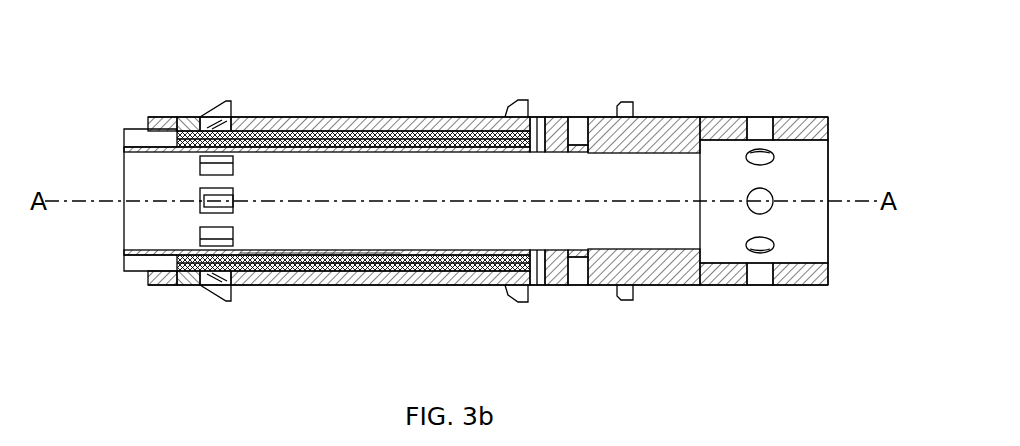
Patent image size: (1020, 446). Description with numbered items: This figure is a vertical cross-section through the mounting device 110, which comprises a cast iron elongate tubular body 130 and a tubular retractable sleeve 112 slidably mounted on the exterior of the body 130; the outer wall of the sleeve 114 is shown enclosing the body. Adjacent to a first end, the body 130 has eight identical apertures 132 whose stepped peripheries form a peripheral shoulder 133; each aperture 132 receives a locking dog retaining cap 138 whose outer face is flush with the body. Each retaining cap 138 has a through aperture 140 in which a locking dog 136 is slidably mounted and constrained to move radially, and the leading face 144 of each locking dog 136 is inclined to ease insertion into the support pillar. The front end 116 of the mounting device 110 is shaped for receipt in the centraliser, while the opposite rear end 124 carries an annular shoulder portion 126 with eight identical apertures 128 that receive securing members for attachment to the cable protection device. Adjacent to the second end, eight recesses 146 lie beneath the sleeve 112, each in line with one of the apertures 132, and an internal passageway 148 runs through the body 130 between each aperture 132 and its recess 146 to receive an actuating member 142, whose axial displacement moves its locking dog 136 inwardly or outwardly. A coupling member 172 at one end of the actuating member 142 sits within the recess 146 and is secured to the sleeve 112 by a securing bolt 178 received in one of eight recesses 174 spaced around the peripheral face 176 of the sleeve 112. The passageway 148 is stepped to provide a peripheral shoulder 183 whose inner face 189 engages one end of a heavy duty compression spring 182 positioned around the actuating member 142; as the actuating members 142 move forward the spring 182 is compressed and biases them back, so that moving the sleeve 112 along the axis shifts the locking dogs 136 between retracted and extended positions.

The mounting device 110 is at (432, 100).
The tubular retractable sleeve 112 is at (592, 116).
The outer tube body 114 is at (642, 117).
The front end 116 is at (124, 262).
The rear end 124 is at (830, 125).
The annular shoulder portion 126 is at (802, 130).
The apertures 128 is at (760, 250).
The elongate tubular body 130 is at (395, 285).
The apertures 132 is at (235, 150).
The peripheral shoulder 133 is at (148, 122).
The locking dog 136 is at (218, 108).
The locking dog retaining cap 138 is at (185, 117).
The through aperture 140 is at (190, 287).
The actuating member 142 is at (365, 117).
The leading face 144 is at (226, 104).
The recesses 146 is at (578, 115).
The internal passageway 148 is at (402, 117).
The coupling member 172 is at (540, 115).
The recesses 174 is at (548, 290).
The peripheral face 176 is at (602, 290).
The securing bolt 178 is at (557, 115).
The heavy duty compression spring 182 is at (288, 117).
The peripheral shoulder 183 is at (345, 285).
The inner face 189 is at (310, 250).